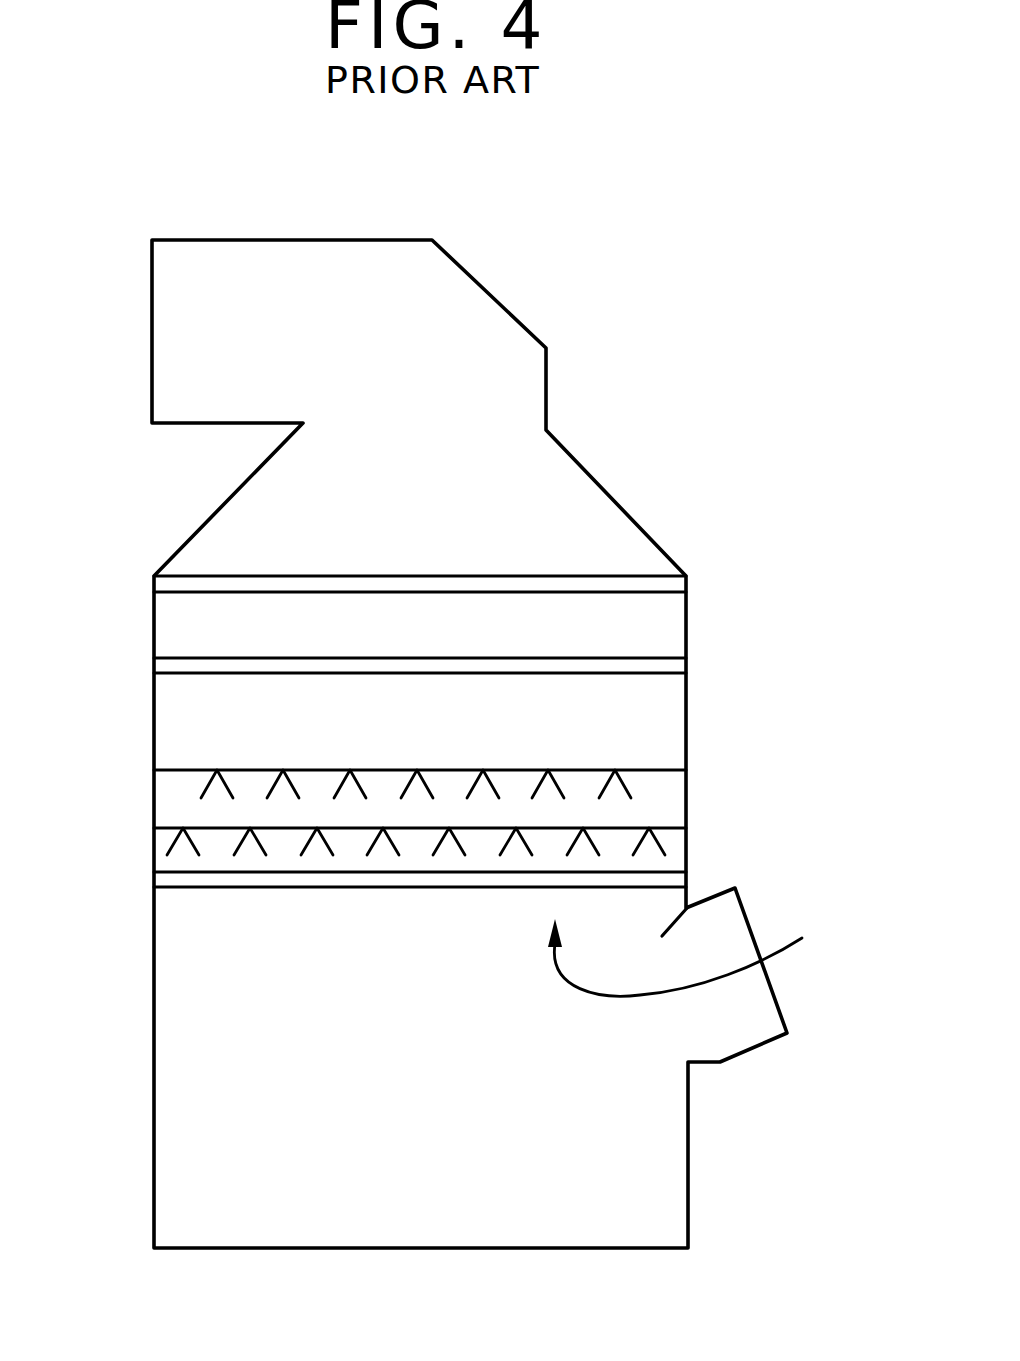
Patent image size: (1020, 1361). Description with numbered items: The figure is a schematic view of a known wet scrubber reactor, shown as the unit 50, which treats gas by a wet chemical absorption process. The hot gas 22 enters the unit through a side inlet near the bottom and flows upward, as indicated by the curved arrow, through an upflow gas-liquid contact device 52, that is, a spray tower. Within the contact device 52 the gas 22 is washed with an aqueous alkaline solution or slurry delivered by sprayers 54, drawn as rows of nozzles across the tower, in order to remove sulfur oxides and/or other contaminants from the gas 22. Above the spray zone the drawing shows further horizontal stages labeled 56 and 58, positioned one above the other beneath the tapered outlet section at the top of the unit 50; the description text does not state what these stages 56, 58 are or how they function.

The wet scrubber unit 50 is at (672, 372).
The upper mist eliminator section 58 is at (688, 576).
The intermediate tray / mist eliminator 56 is at (153, 670).
The upflow gas-liquid contact device 52 is at (153, 795).
The sprayers 54 is at (614, 768).
The hot gas 22 is at (672, 997).